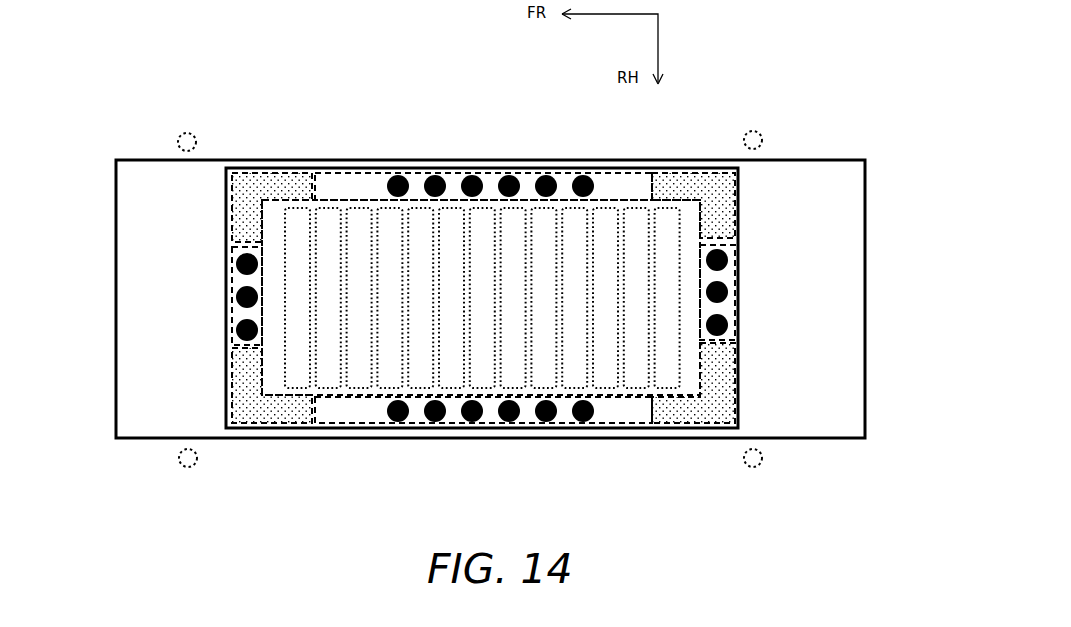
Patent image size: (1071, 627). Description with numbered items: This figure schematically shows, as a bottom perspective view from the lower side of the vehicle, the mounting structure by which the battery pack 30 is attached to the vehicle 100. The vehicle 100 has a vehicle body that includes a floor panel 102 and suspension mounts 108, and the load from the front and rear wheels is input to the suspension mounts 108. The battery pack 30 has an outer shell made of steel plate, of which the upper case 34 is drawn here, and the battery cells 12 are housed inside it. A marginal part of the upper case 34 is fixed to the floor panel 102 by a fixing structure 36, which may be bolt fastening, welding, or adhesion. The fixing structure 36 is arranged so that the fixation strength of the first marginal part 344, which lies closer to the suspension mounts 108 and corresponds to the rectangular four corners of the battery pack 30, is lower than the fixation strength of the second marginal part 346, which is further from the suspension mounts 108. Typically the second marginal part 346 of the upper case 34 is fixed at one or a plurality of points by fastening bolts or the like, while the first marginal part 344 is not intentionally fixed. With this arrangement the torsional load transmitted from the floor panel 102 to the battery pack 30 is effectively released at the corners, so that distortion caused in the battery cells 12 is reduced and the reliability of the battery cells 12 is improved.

The vehicle 100 is at (490, 284).
The floor panel 102 is at (138, 195).
The suspension mounts 108 is at (195, 131).
The upper case 34 is at (368, 168).
The first marginal part 344 is at (290, 187).
The second marginal part 346 is at (560, 175).
The fixing structure 36 is at (436, 176).
The battery pack 30 is at (481, 374).
The battery cell 12 is at (330, 377).